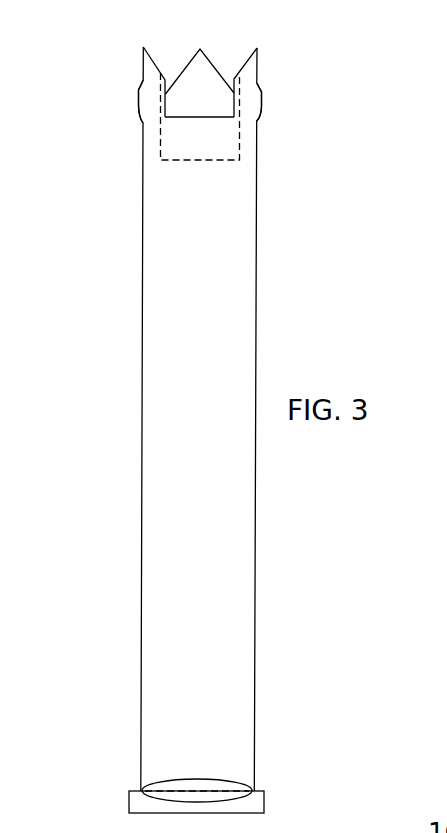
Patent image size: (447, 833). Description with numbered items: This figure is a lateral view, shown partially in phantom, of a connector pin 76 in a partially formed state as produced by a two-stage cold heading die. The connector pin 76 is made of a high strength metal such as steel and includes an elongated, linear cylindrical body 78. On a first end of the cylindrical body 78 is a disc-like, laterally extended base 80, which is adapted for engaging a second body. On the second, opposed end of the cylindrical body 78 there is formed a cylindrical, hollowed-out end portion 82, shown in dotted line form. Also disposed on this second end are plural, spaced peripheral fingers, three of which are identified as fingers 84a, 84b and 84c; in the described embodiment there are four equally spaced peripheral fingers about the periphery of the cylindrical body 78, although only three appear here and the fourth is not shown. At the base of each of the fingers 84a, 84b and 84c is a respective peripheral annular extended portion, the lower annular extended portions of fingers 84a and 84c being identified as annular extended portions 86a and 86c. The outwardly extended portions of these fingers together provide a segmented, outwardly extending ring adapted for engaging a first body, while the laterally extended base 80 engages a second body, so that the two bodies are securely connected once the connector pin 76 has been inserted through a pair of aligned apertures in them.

The connector pin 76 is at (293, 333).
The cylindrical body 78 is at (256, 271).
The laterally extended base 80 is at (255, 802).
The hollowed-out end portion 82 is at (165, 131).
The peripheral finger 84a is at (148, 72).
The peripheral finger 84b is at (196, 72).
The peripheral finger 84c is at (253, 58).
The annular extended portion 86a is at (140, 98).
The annular extended portion 86c is at (262, 102).